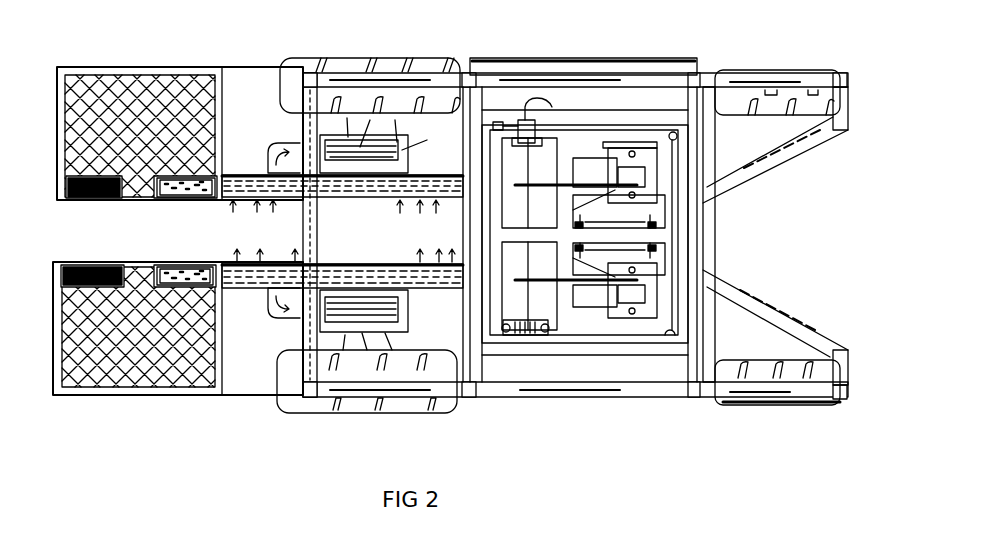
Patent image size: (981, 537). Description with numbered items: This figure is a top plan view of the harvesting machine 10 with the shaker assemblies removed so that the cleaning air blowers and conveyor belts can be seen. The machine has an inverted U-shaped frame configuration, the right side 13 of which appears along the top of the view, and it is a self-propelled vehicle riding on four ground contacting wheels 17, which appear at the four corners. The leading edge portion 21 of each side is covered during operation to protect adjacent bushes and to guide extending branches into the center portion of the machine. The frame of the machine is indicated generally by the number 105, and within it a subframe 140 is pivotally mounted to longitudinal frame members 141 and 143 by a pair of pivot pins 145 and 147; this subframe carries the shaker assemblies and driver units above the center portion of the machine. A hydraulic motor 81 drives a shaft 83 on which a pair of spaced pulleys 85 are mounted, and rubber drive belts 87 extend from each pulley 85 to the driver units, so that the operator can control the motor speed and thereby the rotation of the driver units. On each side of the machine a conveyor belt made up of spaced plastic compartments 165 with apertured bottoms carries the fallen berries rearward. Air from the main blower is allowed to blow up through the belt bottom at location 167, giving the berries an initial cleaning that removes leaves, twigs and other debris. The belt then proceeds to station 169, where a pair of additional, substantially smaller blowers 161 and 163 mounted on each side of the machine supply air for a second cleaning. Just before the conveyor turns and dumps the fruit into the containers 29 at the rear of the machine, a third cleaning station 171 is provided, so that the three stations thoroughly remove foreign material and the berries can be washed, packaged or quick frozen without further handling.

The harvesting machine 10 is at (519, 50).
The right side 13 is at (668, 58).
The ground contacting wheels 17 is at (338, 58).
The leading edge portion 21 is at (843, 107).
The containers 29 is at (83, 199).
The hydraulic motor 81 is at (531, 183).
The shaft 83 is at (531, 286).
The pulleys 85 is at (576, 250).
The rubber drive belts 87 is at (619, 233).
The frame 105 is at (767, 305).
The subframe 140 is at (673, 233).
The longitudinal frame member 141 is at (592, 352).
The longitudinal frame member 143 is at (567, 124).
The pivot pin 145 is at (495, 122).
The pivot pin 147 is at (497, 343).
The blower 161 is at (405, 168).
The blower 163 is at (400, 312).
The plastic compartments 165 is at (348, 198).
The first cleaning location 167 is at (443, 198).
The second cleaning station 169 is at (290, 200).
The third cleaning station 171 is at (222, 202).